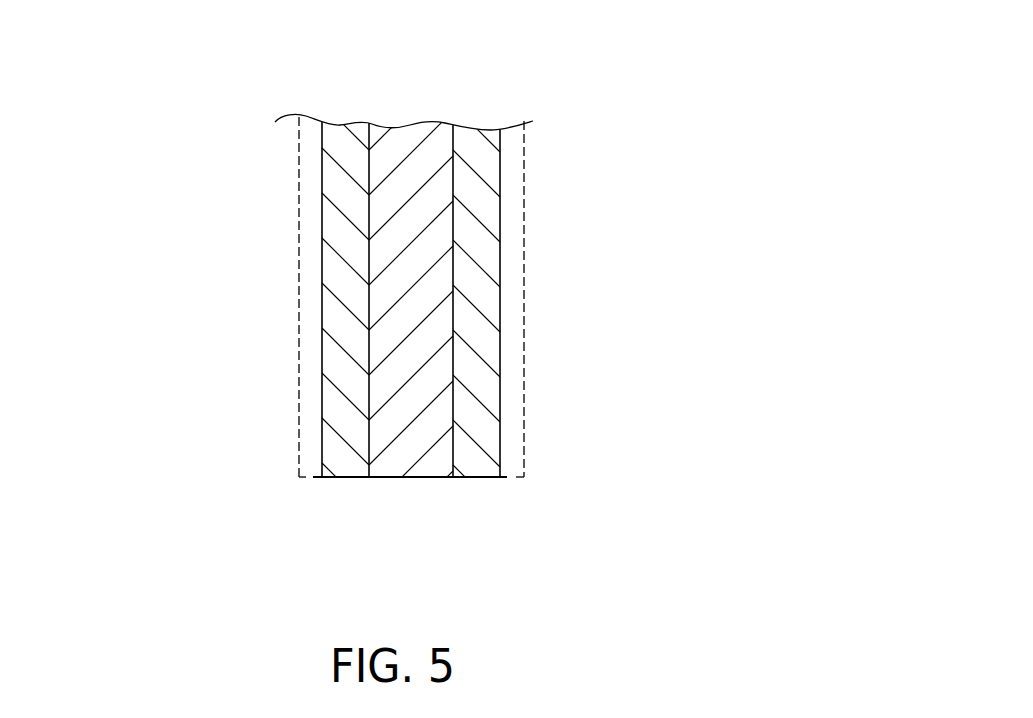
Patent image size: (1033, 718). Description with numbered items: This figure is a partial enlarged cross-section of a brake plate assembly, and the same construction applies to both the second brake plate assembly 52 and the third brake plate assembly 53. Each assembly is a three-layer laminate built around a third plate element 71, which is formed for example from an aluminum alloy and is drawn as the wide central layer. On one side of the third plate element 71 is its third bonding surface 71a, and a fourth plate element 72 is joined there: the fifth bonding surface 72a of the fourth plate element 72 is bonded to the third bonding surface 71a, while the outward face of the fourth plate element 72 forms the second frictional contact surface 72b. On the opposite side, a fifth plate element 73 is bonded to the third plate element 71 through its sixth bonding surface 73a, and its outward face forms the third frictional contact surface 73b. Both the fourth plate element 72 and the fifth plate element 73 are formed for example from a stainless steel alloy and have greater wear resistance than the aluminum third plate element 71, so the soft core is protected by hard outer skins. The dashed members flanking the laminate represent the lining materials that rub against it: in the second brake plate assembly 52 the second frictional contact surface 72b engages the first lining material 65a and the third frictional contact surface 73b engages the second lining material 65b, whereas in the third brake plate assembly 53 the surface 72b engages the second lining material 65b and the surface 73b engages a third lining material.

The second brake plate assembly 52 is at (462, 306).
The third brake plate assembly 53 is at (408, 306).
The third plate element 71 is at (414, 306).
The third bonding surface 71a is at (369, 195).
The fourth plate element 72 is at (532, 345).
The fifth bonding surface 72a is at (453, 290).
The second frictional contact surface 72b is at (500, 345).
The fifth plate element 73 is at (287, 344).
The sixth bonding surface 73a is at (369, 299).
The third frictional contact surface 73b is at (322, 345).
The first lining material 65a is at (524, 422).
The second lining material 65b is at (189, 297).